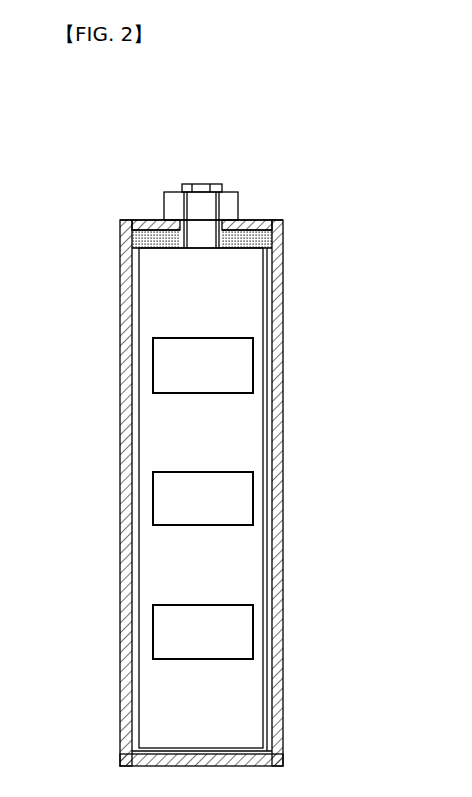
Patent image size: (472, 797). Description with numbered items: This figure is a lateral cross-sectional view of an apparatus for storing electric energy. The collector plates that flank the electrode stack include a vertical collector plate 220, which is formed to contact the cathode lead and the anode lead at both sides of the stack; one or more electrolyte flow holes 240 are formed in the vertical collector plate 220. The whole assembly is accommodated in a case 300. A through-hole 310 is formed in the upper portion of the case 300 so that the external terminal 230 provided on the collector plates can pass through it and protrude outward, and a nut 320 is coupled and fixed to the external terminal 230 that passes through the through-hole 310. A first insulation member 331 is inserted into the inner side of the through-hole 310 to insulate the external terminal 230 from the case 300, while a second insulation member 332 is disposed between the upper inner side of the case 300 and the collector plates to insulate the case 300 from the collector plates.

The vertical collector plate 220 is at (253, 285).
The electrolyte flow hole 240 is at (243, 366).
The case 300 is at (205, 186).
The through-hole 310 is at (195, 232).
The external terminal 230 is at (221, 184).
The nut 320 is at (229, 205).
The first insulation member 331 is at (282, 223).
The second insulation member 332 is at (140, 243).